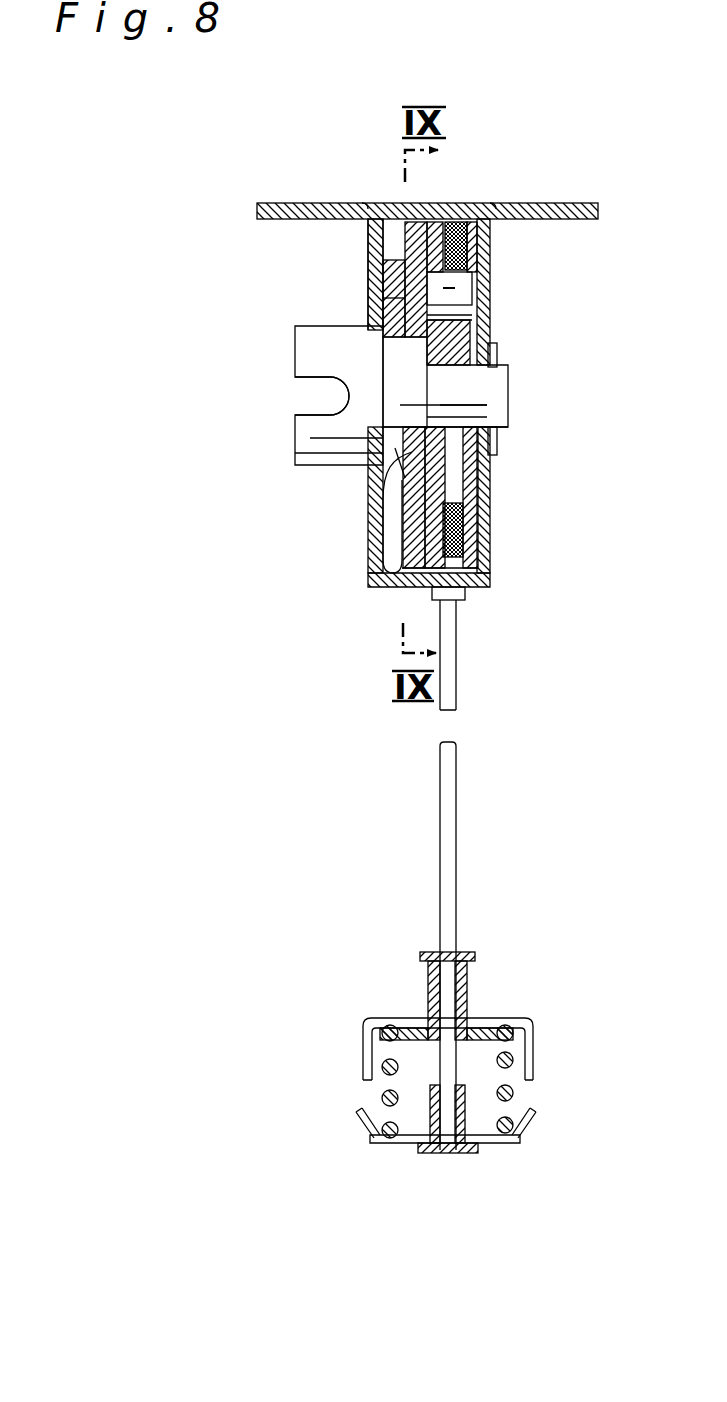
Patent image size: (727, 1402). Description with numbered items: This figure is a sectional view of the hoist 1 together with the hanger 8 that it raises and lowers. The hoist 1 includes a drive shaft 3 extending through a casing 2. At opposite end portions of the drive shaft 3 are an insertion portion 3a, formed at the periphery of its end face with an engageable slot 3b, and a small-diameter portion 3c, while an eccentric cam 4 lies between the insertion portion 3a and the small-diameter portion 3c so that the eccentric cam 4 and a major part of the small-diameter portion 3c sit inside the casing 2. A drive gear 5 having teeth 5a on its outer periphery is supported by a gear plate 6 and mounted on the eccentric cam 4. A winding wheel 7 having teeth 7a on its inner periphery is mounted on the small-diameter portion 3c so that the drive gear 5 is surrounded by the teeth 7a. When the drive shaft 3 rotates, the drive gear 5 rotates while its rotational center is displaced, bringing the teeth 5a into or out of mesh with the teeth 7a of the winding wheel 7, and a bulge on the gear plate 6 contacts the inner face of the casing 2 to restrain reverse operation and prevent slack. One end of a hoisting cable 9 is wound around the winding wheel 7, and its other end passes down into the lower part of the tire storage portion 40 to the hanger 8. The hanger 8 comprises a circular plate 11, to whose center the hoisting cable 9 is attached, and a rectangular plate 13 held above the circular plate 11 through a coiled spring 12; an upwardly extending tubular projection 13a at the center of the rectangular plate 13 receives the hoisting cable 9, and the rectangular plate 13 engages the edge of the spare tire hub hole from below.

The hoist 1 is at (232, 275).
The casing 2 is at (463, 213).
The drive shaft 3 is at (507, 390).
The insertion portion 3a is at (315, 462).
The engageable slot 3b is at (330, 392).
The small-diameter portion 3c is at (490, 403).
The eccentric cam 4 is at (370, 478).
The drive gear 5 is at (400, 306).
The teeth 5a is at (397, 492).
The gear plate 6 is at (368, 495).
The winding wheel 7 is at (480, 253).
The teeth 7a is at (432, 563).
The hanger 8 is at (567, 996).
The hoisting cable 9 is at (443, 822).
The circular plate 11 is at (362, 1135).
The coiled spring 12 is at (520, 1093).
The rectangular plate 13 is at (500, 1018).
The tubular projection 13a is at (425, 963).
The tire storage portion 40 is at (543, 1168).